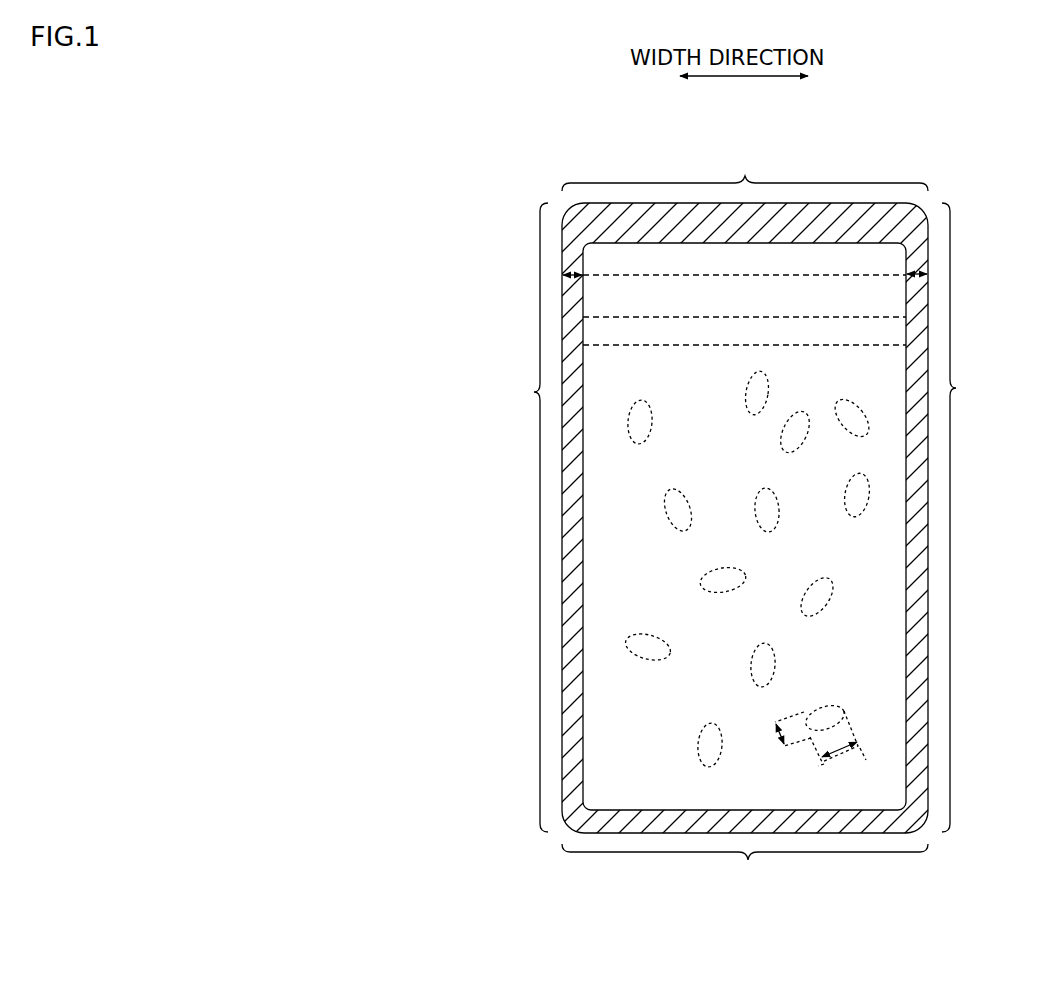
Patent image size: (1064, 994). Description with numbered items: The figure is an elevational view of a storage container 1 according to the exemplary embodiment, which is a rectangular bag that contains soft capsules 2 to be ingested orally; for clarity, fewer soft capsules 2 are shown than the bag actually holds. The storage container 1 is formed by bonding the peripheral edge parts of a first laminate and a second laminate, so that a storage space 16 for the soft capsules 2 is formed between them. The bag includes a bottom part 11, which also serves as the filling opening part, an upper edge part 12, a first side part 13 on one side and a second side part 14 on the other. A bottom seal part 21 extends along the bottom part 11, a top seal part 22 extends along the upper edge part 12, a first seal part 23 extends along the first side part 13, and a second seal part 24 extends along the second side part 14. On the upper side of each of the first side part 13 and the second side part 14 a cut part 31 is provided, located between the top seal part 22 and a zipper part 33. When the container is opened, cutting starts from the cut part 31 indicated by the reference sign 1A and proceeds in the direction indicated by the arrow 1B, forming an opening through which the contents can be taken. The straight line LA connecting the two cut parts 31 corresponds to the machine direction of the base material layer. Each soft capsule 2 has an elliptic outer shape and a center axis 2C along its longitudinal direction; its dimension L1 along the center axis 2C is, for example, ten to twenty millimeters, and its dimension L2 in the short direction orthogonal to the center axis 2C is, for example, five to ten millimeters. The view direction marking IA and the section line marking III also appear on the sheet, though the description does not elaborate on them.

The storage container 1 is at (904, 156).
The cut part start point 1A is at (561, 284).
The cutting direction arrow 1B is at (668, 260).
The soft capsule 2 is at (872, 471).
The center axis 2C is at (824, 708).
The bottom part (filling opening part) 11 is at (745, 868).
The upper edge part 12 is at (745, 169).
The first side part 13 is at (524, 517).
The second side part 14 is at (966, 517).
The storage space 16 is at (873, 575).
The bottom seal part 21 is at (806, 820).
The top seal part 22 is at (793, 215).
The first seal part 23 is at (574, 628).
The second seal part 24 is at (908, 628).
The cut part 31 is at (560, 274).
The zipper part 33 is at (703, 332).
The straight line LA is at (820, 275).
The dimension L1 is at (842, 764).
The dimension L2 is at (777, 733).
The view direction IA is at (524, 518).
The section line III is at (742, 105).